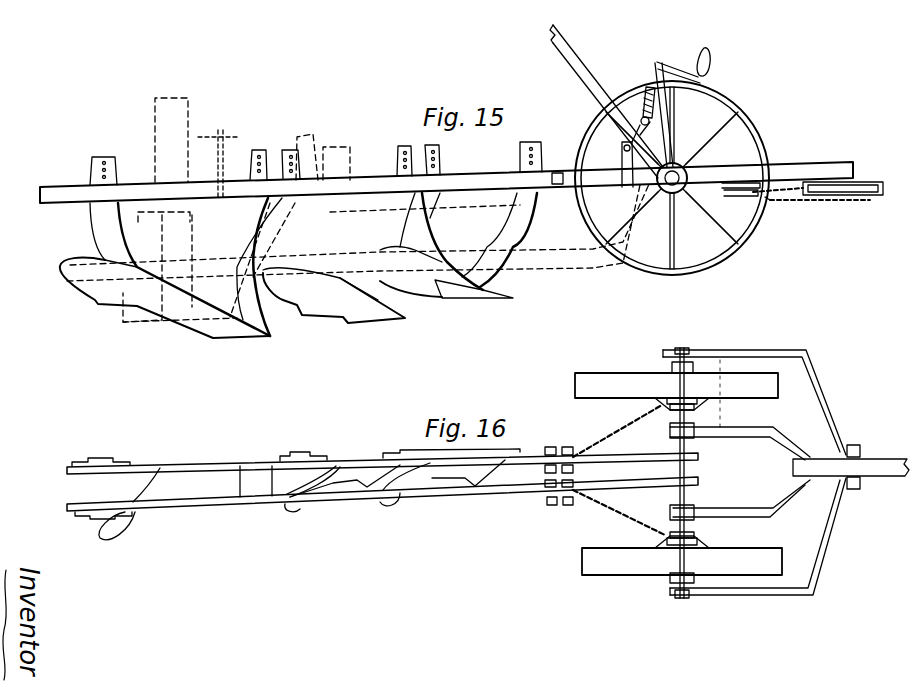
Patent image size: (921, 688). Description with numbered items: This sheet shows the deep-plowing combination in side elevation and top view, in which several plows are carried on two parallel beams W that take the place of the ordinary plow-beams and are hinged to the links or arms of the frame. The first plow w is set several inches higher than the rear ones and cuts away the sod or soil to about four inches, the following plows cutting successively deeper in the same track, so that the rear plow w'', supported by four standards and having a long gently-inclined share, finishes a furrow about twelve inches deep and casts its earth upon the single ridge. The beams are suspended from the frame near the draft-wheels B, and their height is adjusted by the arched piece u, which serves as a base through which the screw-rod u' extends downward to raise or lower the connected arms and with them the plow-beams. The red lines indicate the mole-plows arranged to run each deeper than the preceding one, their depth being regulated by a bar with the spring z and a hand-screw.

In FIG. 15, the beam W is at (446, 182).
In FIG. 15, the spring z is at (358, 210).
In FIG. 15, the coulter i is at (218, 158).
In FIG. 15, the first plow w is at (458, 245).
In FIG. 16, the first plow w is at (508, 500).
In FIG. 15, the rear plow w'' is at (165, 270).
In FIG. 15, the screw-rod u' is at (321, 267).
In FIG. 15, the arched piece u is at (666, 116).
In FIG. 16, the arched piece u is at (302, 500).
In FIG. 16, the draft-wheels B is at (678, 474).